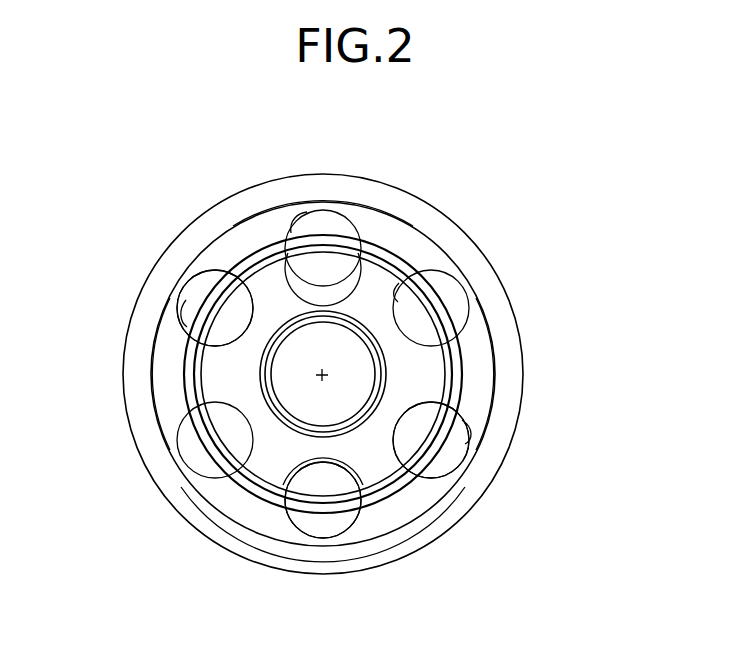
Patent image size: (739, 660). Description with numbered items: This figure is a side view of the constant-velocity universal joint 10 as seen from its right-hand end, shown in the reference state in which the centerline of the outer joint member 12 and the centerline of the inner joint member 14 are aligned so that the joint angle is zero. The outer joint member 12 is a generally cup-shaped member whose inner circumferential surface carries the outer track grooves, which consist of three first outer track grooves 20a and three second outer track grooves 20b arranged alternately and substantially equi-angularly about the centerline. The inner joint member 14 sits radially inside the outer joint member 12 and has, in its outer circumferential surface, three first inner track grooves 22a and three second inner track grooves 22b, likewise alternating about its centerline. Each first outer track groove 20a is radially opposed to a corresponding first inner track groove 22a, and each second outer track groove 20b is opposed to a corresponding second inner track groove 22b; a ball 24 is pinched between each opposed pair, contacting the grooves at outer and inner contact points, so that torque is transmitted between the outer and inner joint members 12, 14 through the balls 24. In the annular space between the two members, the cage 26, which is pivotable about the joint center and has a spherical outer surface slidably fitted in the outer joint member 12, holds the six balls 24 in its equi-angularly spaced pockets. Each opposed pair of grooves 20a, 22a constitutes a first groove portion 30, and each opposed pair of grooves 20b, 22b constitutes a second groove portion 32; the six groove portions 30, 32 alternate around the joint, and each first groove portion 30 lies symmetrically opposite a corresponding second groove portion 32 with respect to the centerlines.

The constant-velocity universal joint 10 is at (466, 166).
The outer joint member 12 is at (505, 364).
The inner joint member 14 is at (228, 371).
The first outer track groove 20a is at (290, 233).
The second outer track groove 20b is at (180, 330).
The first inner track groove 22a is at (345, 240).
The second inner track groove 22b is at (218, 300).
The ball 24 is at (323, 227).
The cage 26 is at (190, 397).
The first groove portion 30 is at (304, 187).
The second groove portion 32 is at (468, 257).